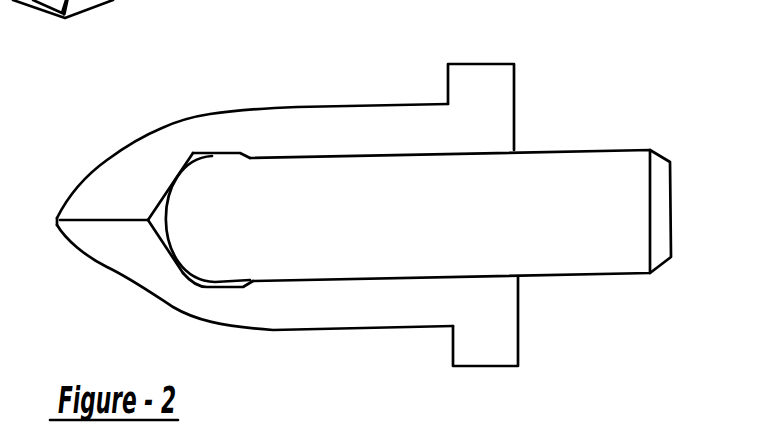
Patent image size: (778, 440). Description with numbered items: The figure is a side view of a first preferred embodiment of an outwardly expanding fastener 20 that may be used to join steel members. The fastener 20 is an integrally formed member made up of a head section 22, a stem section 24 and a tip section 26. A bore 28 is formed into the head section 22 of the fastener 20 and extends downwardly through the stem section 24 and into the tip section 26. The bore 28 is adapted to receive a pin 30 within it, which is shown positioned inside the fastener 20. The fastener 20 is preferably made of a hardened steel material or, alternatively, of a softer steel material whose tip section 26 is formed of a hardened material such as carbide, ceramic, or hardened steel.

The outwardly expanding fastener 20 is at (367, 87).
The head section 22 is at (488, 63).
The stem section 24 is at (297, 107).
The tip section 26 is at (113, 157).
The bore 28 is at (198, 153).
The pin 30 is at (595, 150).